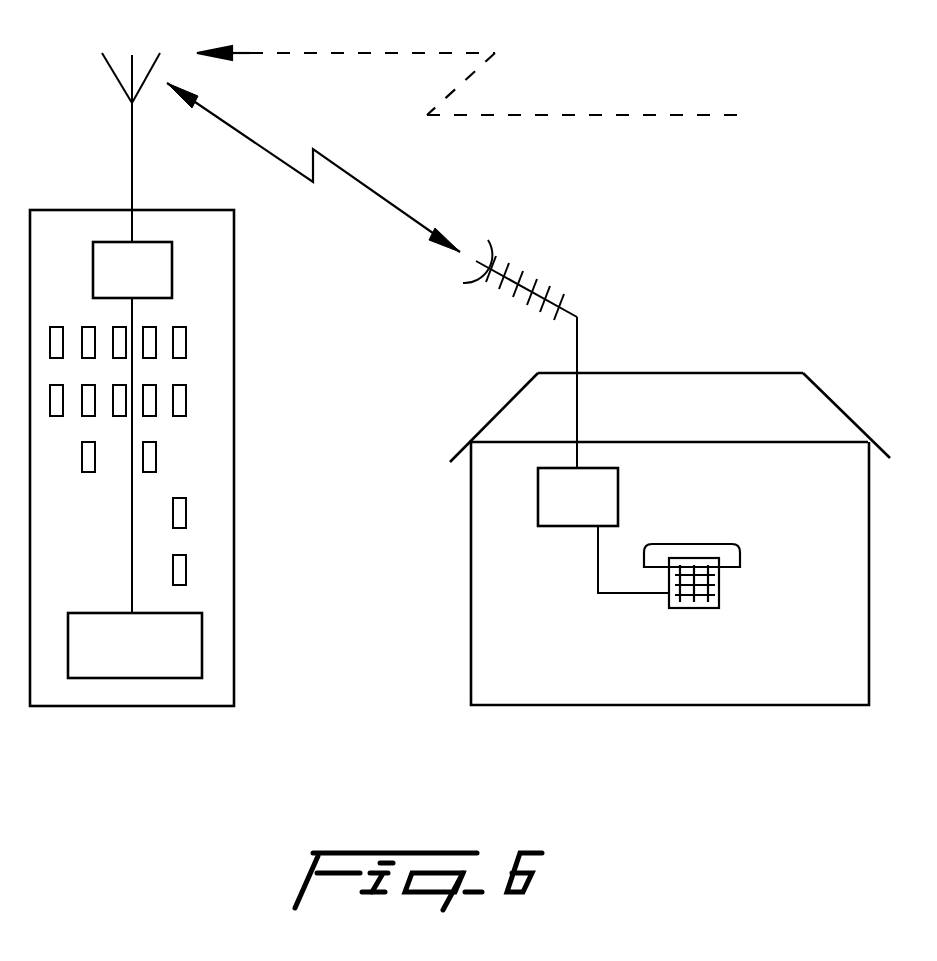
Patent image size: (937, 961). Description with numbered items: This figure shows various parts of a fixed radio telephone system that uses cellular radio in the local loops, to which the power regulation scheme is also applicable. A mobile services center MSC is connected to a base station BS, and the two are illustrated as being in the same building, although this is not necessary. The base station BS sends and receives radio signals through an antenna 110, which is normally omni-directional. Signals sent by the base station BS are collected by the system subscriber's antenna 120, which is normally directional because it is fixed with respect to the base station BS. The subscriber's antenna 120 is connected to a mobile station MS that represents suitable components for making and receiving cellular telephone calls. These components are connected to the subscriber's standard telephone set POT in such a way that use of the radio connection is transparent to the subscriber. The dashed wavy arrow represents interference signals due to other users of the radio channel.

The antenna 110 is at (120, 72).
The subscriber's antenna 120 is at (568, 306).
The base station BS is at (132, 270).
The mobile services center MSC is at (135, 645).
The mobile station MS is at (578, 497).
The subscriber's standard telephone set POT is at (715, 576).